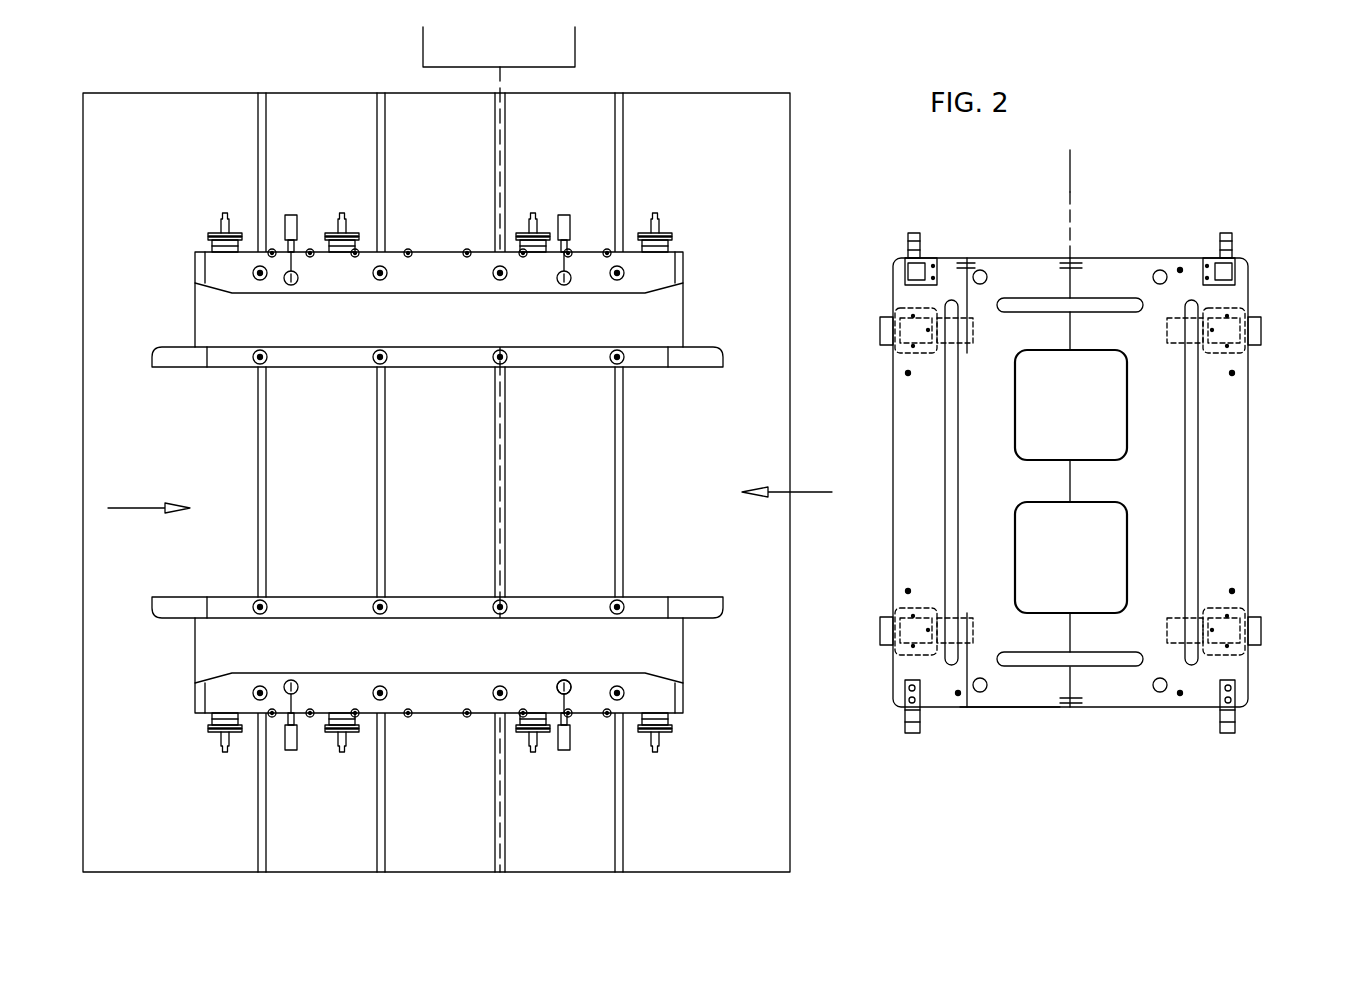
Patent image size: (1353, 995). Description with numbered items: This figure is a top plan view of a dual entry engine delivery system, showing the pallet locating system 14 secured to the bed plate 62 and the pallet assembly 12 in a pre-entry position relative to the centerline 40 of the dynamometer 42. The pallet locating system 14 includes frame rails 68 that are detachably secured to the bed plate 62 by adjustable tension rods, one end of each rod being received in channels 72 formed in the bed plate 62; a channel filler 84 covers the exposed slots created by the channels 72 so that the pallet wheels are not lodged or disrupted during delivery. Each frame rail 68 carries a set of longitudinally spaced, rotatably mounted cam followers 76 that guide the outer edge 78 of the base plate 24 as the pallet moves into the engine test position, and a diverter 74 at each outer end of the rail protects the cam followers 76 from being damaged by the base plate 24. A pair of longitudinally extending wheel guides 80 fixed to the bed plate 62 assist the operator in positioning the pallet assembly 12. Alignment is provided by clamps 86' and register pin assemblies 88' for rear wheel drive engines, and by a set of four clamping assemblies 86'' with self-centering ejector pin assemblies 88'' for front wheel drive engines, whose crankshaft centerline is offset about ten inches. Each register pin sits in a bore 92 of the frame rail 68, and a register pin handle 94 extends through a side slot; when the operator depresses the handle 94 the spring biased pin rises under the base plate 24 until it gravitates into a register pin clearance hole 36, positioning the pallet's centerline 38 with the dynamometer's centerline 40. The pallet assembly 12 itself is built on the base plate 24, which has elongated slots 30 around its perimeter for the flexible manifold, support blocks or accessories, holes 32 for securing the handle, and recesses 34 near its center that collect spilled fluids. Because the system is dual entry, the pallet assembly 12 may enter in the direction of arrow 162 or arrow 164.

The pallet locating system 14 is at (280, 82).
The bed plate 62 is at (790, 812).
The dynamometer 42 is at (515, 63).
The centerline of the dynamometer 40 is at (500, 83).
The channels 72 is at (258, 165).
The frame rails 68 is at (195, 267).
The channel filler 84 is at (205, 298).
The diverter 74 is at (205, 252).
The wheel guides 80 is at (162, 363).
The cam followers 76 is at (410, 253).
The clamping assemblies 86'' is at (197, 484).
The clamps 86' is at (525, 484).
The self-centering ejector pin assemblies 88'' is at (325, 483).
The register pin assemblies 88' is at (627, 503).
The register pin handle 94 is at (560, 747).
The bore 92 is at (565, 682).
The arrow 164 is at (160, 505).
The arrow 162 is at (797, 492).
The pallet assembly 12 is at (1108, 218).
The base plate 24 is at (1020, 495).
The outer edge 78 is at (1013, 707).
The pallet's centerline 38 is at (1068, 183).
The elongated slots 30 is at (1190, 520).
The recesses 34 is at (1082, 427).
The register pin clearance holes 36 is at (981, 270).
The holes 32 is at (1232, 591).